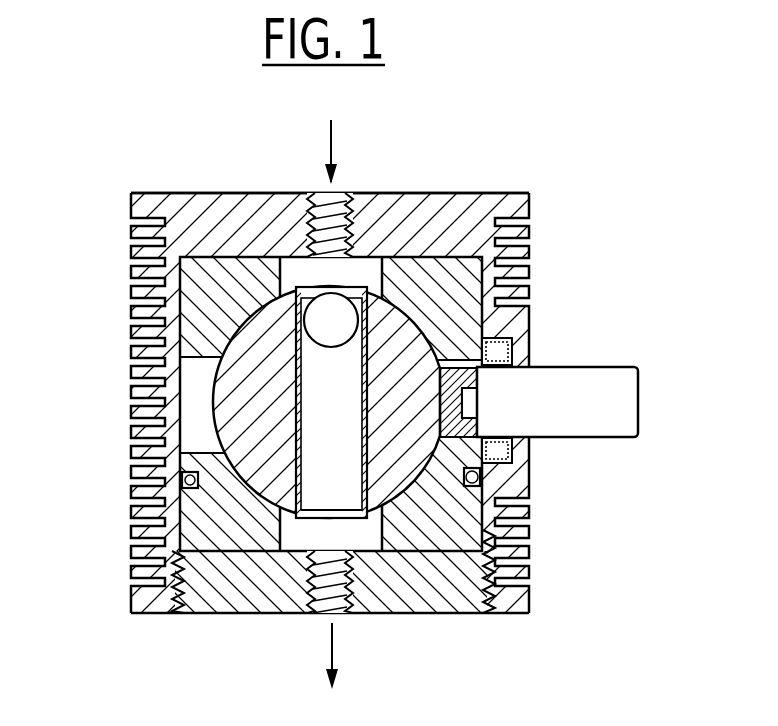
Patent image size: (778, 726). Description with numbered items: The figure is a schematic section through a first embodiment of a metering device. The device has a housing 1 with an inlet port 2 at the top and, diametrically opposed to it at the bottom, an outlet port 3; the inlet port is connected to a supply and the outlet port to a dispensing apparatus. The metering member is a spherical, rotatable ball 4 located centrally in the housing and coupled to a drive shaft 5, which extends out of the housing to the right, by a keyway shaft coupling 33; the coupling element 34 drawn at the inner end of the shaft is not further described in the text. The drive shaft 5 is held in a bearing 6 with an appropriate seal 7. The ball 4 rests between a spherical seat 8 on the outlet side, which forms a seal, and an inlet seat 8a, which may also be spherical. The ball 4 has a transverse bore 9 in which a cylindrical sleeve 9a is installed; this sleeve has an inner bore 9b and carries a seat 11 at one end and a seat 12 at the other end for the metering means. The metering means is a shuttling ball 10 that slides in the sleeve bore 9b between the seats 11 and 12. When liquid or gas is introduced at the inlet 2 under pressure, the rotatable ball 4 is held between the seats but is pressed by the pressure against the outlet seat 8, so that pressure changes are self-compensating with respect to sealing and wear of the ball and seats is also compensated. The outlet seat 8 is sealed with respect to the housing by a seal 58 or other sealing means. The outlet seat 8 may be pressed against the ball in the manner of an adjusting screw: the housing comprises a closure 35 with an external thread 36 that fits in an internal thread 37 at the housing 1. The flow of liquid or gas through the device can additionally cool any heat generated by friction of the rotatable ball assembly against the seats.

The housing 1 is at (415, 180).
The inlet port 2 is at (326, 200).
The outlet port 3 is at (330, 602).
The ball 4 is at (252, 380).
The drive shaft 5 is at (597, 402).
The bearing 6 is at (543, 418).
The seal 7 is at (510, 457).
The spherical seat 8 is at (453, 505).
The inlet seat 8a is at (455, 283).
The transverse bore 9 is at (167, 247).
The cylindrical sleeve 9a is at (295, 420).
The inner bore 9b is at (318, 366).
The shuttling ball 10 is at (345, 328).
The seat 11 is at (308, 295).
The seat 12 is at (355, 512).
The keyway shaft coupling 33 is at (462, 383).
The coupling slot 34 is at (463, 408).
The closure 35 is at (272, 590).
The external thread 36 is at (487, 607).
The internal thread 37 is at (210, 588).
The seal 58 is at (185, 482).